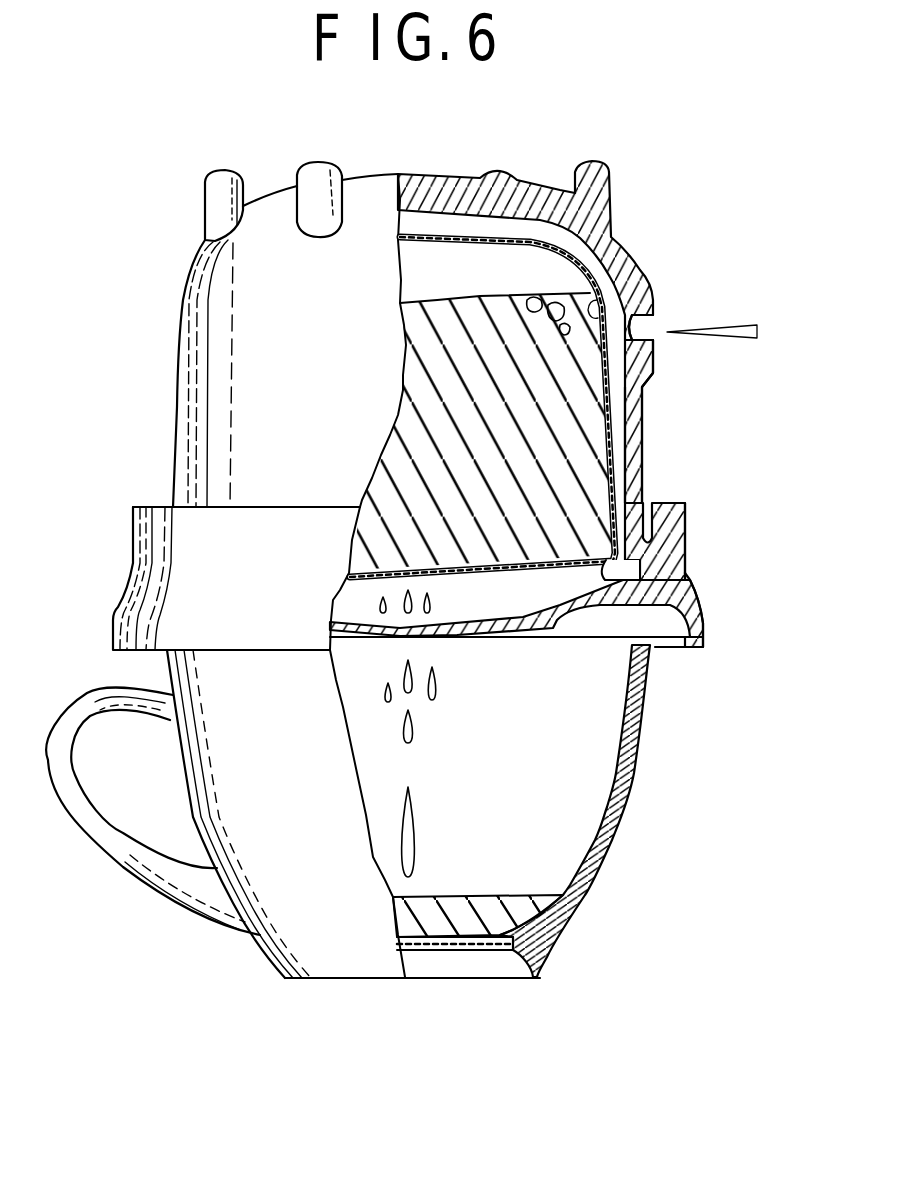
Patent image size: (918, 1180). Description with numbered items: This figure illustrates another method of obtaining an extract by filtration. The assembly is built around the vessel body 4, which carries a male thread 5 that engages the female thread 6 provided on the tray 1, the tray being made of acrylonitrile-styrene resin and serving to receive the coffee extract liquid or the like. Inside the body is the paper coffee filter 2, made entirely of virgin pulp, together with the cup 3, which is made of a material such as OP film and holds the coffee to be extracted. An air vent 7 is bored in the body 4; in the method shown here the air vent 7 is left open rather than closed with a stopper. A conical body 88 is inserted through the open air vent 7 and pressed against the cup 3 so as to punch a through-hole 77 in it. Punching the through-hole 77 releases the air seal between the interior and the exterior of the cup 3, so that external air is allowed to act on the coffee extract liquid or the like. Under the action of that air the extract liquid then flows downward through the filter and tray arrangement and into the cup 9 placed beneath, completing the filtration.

The tray 1 is at (700, 623).
The paper coffee filter 2 is at (690, 573).
The cup 3 is at (643, 423).
The vessel body 4 is at (613, 247).
The male thread 5 is at (687, 533).
The female thread 6 is at (663, 503).
The air vent 7 is at (637, 323).
The cup 9 is at (630, 757).
The through-hole 77 is at (653, 367).
The conical body 88 is at (730, 323).